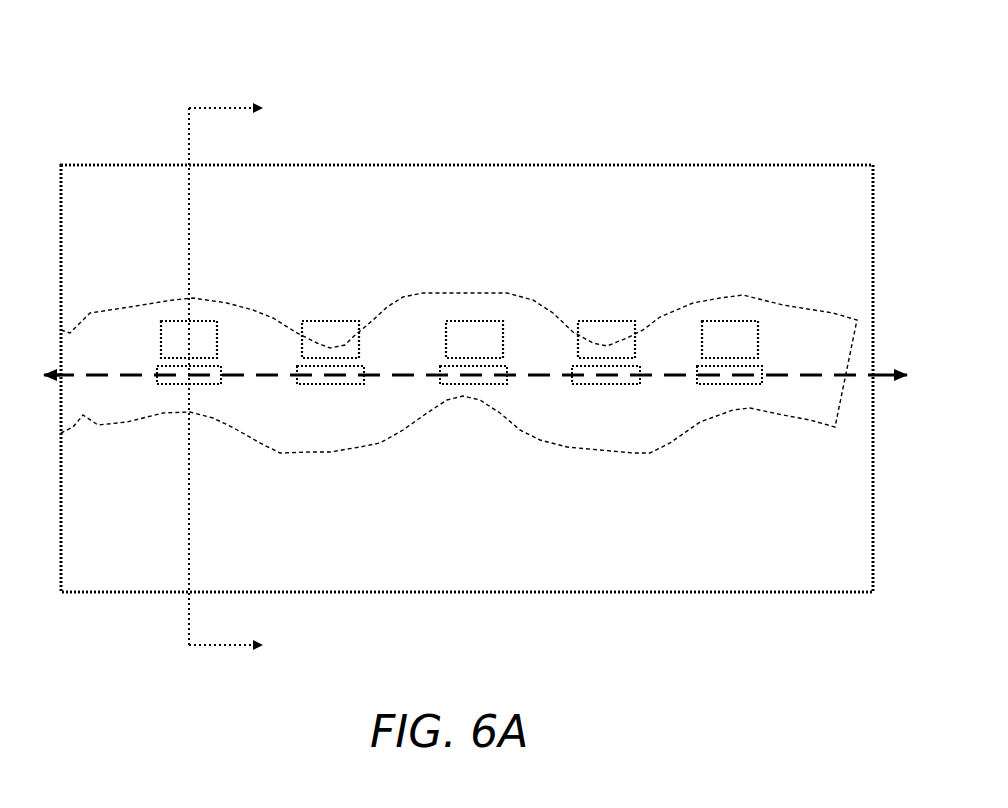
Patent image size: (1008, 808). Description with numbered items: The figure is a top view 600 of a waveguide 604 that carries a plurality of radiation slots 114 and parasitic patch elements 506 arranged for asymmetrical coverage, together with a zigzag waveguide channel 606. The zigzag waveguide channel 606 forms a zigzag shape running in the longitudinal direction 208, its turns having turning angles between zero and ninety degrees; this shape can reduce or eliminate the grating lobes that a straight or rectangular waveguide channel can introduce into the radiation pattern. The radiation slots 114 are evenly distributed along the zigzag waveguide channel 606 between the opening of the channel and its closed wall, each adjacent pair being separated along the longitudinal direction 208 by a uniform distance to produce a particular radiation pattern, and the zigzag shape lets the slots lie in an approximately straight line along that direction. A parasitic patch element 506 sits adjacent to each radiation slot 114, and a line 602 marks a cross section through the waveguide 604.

The top view 600 is at (110, 58).
The cross-section line 602 is at (189, 133).
The waveguide 604 is at (569, 165).
The parasitic patch element 506 is at (336, 321).
The radiation slot 114 is at (216, 383).
The zigzag waveguide channel 606 is at (519, 402).
The longitudinal direction 208 is at (777, 378).